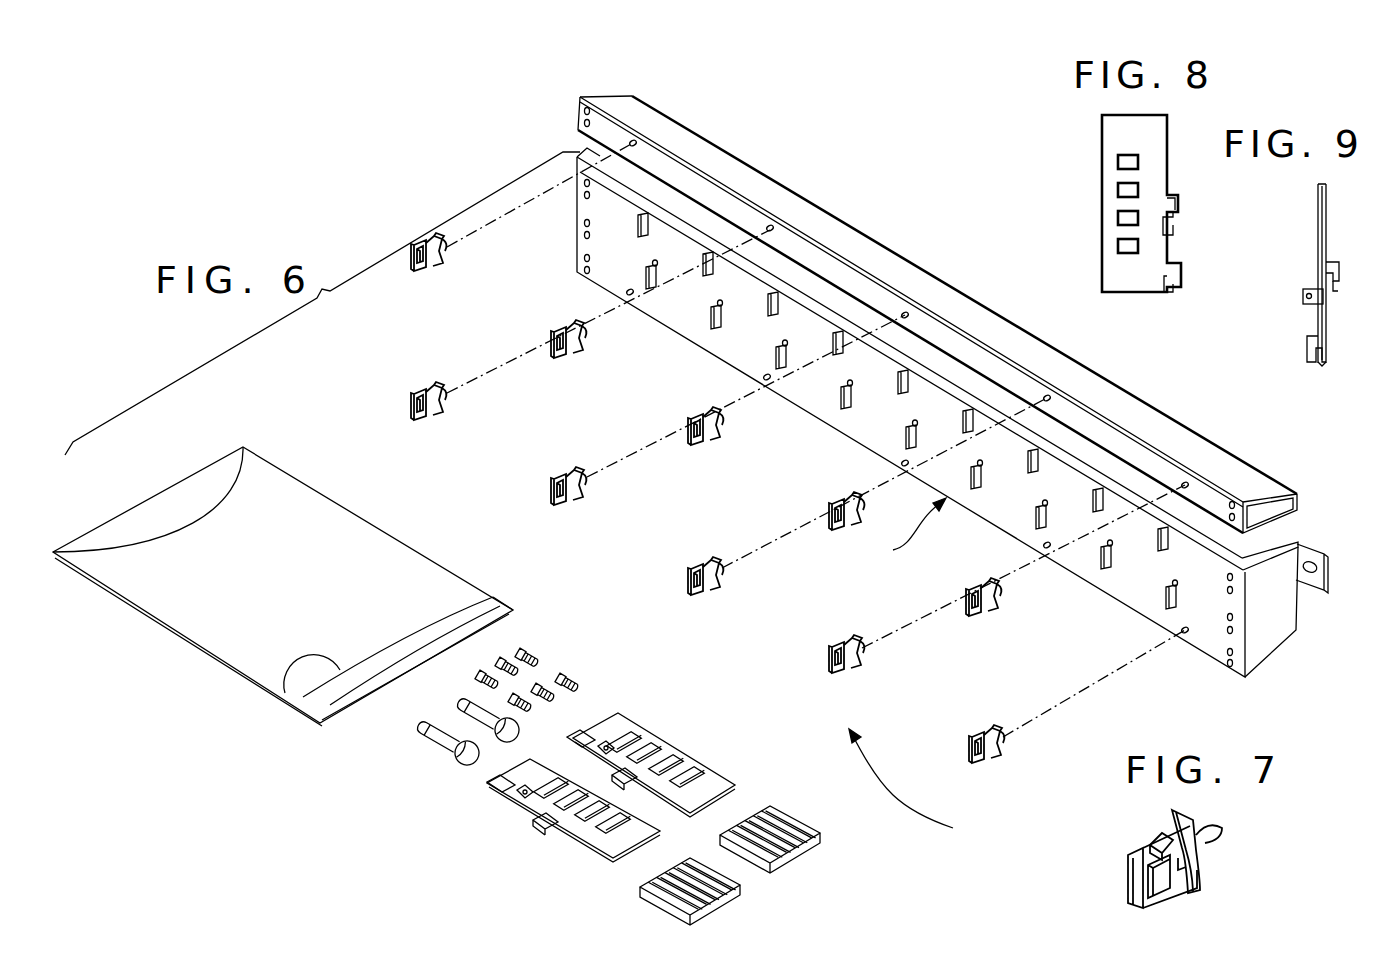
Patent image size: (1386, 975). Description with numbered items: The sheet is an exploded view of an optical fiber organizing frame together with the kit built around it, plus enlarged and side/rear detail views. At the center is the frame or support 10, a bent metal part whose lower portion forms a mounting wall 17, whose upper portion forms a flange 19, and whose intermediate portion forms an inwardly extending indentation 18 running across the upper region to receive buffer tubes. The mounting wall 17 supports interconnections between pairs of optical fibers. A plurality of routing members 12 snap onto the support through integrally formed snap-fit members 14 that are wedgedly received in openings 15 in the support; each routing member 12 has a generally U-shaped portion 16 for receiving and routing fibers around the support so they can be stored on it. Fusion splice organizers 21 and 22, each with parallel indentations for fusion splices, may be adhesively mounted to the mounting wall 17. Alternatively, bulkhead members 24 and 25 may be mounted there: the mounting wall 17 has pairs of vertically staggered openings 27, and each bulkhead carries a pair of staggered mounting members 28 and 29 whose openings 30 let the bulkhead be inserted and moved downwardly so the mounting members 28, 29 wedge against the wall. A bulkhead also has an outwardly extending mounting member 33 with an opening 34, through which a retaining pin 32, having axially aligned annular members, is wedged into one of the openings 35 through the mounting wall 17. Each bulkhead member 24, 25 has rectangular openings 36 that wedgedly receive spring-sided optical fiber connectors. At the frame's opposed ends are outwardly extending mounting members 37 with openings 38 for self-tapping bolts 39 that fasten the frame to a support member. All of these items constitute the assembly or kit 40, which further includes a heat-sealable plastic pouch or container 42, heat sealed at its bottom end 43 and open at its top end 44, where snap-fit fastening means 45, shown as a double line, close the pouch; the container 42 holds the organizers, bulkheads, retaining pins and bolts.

In FIG. 6, the frame or support 10 is at (897, 250).
In FIG. 6, the routing member 12 is at (733, 507).
In FIG. 7, the routing member 12 is at (1170, 863).
In FIG. 6, the snap-fit member 14 is at (1003, 745).
In FIG. 7, the snap-fit member 14 is at (1212, 837).
In FIG. 6, the opening 15 is at (773, 226).
In FIG. 6, the U-shaped portion 16 is at (975, 748).
In FIG. 7, the U-shaped portion 16 is at (1128, 907).
In FIG. 6, the mounting wall 17 is at (697, 293).
In FIG. 6, the indentation 18 is at (1268, 533).
In FIG. 6, the flange 19 is at (810, 250).
In FIG. 6, the fusion splice organizer 21 is at (718, 912).
In FIG. 6, the fusion splice organizer 22 is at (792, 866).
In FIG. 6, the bulkhead member 24 is at (628, 852).
In FIG. 8, the bulkhead member 24 is at (1123, 115).
In FIG. 9, the bulkhead member 24 is at (1318, 180).
In FIG. 6, the bulkhead member 25 is at (703, 807).
In FIG. 6, the staggered openings 27 is at (775, 352).
In FIG. 6, the mounting member 28 is at (628, 786).
In FIG. 8, the mounting member 28 is at (1178, 196).
In FIG. 9, the mounting member 28 is at (1346, 253).
In FIG. 6, the mounting member 29 is at (567, 740).
In FIG. 9, the mounting member 29 is at (1307, 343).
In FIG. 8, the opening 30 is at (1172, 222).
In FIG. 9, the opening 30 is at (1333, 283).
In FIG. 6, the retaining pin 32 is at (500, 665).
In FIG. 9, the outwardly extending mounting member 33 is at (1310, 288).
In FIG. 9, the opening 34 is at (1304, 299).
In FIG. 6, the opening 35 is at (650, 262).
In FIG. 6, the rectangular opening 36 is at (672, 760).
In FIG. 6, the mounting member 37 is at (1321, 554).
In FIG. 6, the opening 38 is at (1298, 583).
In FIG. 6, the self-tapping bolt 39 is at (462, 708).
In FIG. 6, the assembly or kit 40 is at (914, 669).
In FIG. 6, the pouch or container 42 is at (245, 632).
In FIG. 6, the bottom end 43 is at (180, 483).
In FIG. 6, the top end 44 is at (398, 677).
In FIG. 6, the snap-fit fastening means 45 is at (292, 678).